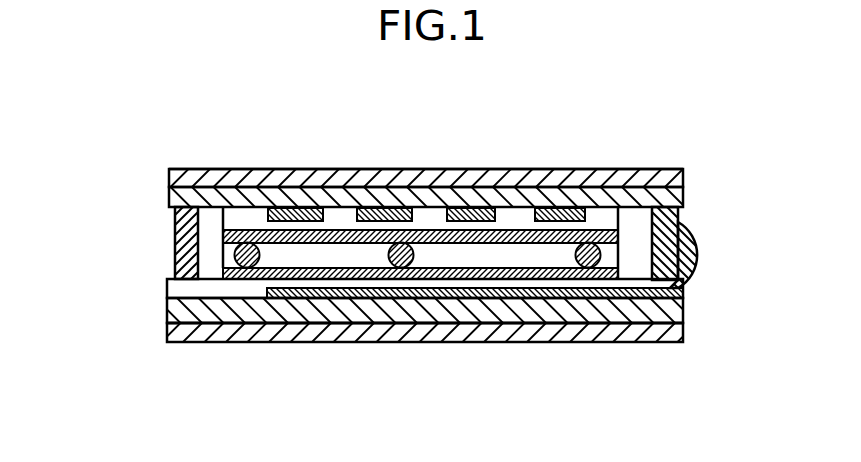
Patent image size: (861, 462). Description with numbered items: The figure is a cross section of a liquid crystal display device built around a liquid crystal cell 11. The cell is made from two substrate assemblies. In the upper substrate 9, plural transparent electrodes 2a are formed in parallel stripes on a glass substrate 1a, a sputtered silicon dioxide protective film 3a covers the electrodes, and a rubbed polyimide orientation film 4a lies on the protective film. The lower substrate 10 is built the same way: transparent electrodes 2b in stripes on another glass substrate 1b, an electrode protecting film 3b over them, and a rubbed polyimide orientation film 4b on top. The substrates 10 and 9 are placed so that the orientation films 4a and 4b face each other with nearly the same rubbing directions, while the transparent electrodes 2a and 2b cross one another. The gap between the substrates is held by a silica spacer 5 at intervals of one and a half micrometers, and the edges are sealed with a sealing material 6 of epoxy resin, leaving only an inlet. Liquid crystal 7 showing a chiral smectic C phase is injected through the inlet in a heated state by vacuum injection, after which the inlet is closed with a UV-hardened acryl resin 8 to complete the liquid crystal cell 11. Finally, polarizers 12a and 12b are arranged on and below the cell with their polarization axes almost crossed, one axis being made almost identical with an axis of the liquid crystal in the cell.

The liquid crystal 7 is at (275, 168).
The polarizer 12a is at (363, 180).
The glass substrate 1a is at (430, 193).
The transparent electrodes 2a is at (483, 217).
The protective film 3a is at (602, 220).
The orientation film 4a is at (612, 230).
The silica spacer 5 is at (236, 257).
The sealing material 6 is at (677, 222).
The acryl resin 8 is at (693, 260).
The substrate 9 is at (155, 167).
The substrate 10 is at (153, 273).
The liquid crystal cell 11 is at (82, 180).
The polarizer 12b is at (372, 340).
The glass substrate 1b is at (447, 320).
The transparent electrodes 2b is at (532, 298).
The electrode protecting film 3b is at (590, 298).
The orientation film 4b is at (643, 327).